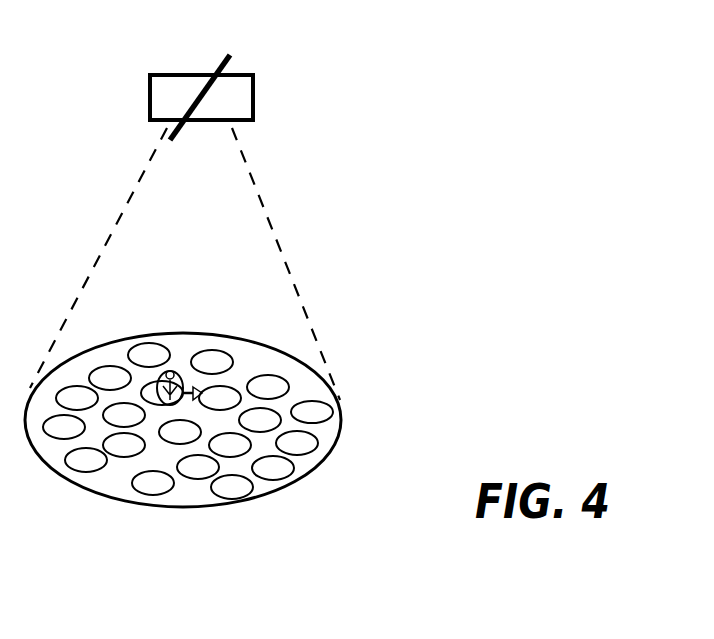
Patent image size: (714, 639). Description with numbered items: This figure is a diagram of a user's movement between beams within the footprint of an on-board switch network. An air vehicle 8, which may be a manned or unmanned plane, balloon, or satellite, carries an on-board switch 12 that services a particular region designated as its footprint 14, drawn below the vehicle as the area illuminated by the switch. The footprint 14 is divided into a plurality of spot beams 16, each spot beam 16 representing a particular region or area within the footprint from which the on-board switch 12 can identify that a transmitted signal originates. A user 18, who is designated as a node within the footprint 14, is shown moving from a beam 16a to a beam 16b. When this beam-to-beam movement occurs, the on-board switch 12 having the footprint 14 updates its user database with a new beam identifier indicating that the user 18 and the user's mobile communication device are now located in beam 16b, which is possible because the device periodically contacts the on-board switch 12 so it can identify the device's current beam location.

The air vehicle 8 is at (182, 73).
The on-board switch 12 is at (255, 78).
The footprint 14 is at (340, 430).
The spot beam 16 is at (268, 383).
The beam 16a is at (152, 388).
The beam 16b is at (233, 398).
The user 18 is at (158, 405).